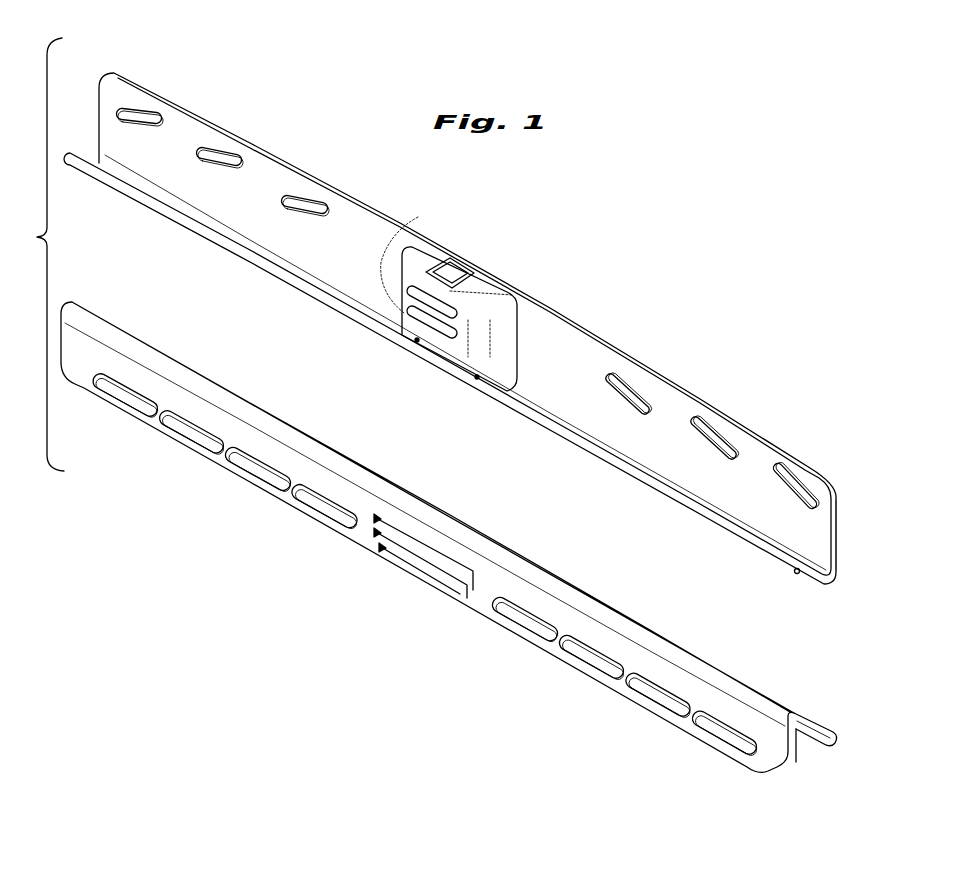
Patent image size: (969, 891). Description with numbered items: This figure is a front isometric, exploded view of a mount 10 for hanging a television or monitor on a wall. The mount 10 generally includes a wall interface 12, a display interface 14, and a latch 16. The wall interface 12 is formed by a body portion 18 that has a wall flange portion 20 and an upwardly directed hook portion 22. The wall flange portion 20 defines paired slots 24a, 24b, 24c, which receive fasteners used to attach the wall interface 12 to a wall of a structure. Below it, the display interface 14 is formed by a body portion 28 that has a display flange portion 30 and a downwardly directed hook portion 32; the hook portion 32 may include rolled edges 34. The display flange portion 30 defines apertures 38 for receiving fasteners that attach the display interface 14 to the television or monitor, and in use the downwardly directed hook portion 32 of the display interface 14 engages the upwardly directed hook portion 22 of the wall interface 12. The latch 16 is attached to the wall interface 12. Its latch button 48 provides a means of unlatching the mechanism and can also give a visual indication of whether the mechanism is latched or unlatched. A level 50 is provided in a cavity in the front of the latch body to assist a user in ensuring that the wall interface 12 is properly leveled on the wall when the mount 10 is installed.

The mount 10 is at (729, 341).
The wall interface 12 is at (833, 582).
The display interface 14 is at (776, 775).
The latch 16 is at (506, 292).
The body portion 18 is at (669, 449).
The wall flange portion 20 is at (836, 512).
The hook portion 22 is at (786, 568).
The slot 24a is at (160, 108).
The slot 24b is at (229, 156).
The slot 24c is at (309, 203).
The body portion 28 is at (503, 587).
The display flange portion 30 is at (799, 752).
The hook portion 32 is at (836, 742).
The rolled edges 34 is at (814, 724).
The apertures 38 is at (137, 412).
The latch button 48 is at (452, 268).
The level 50 is at (418, 217).